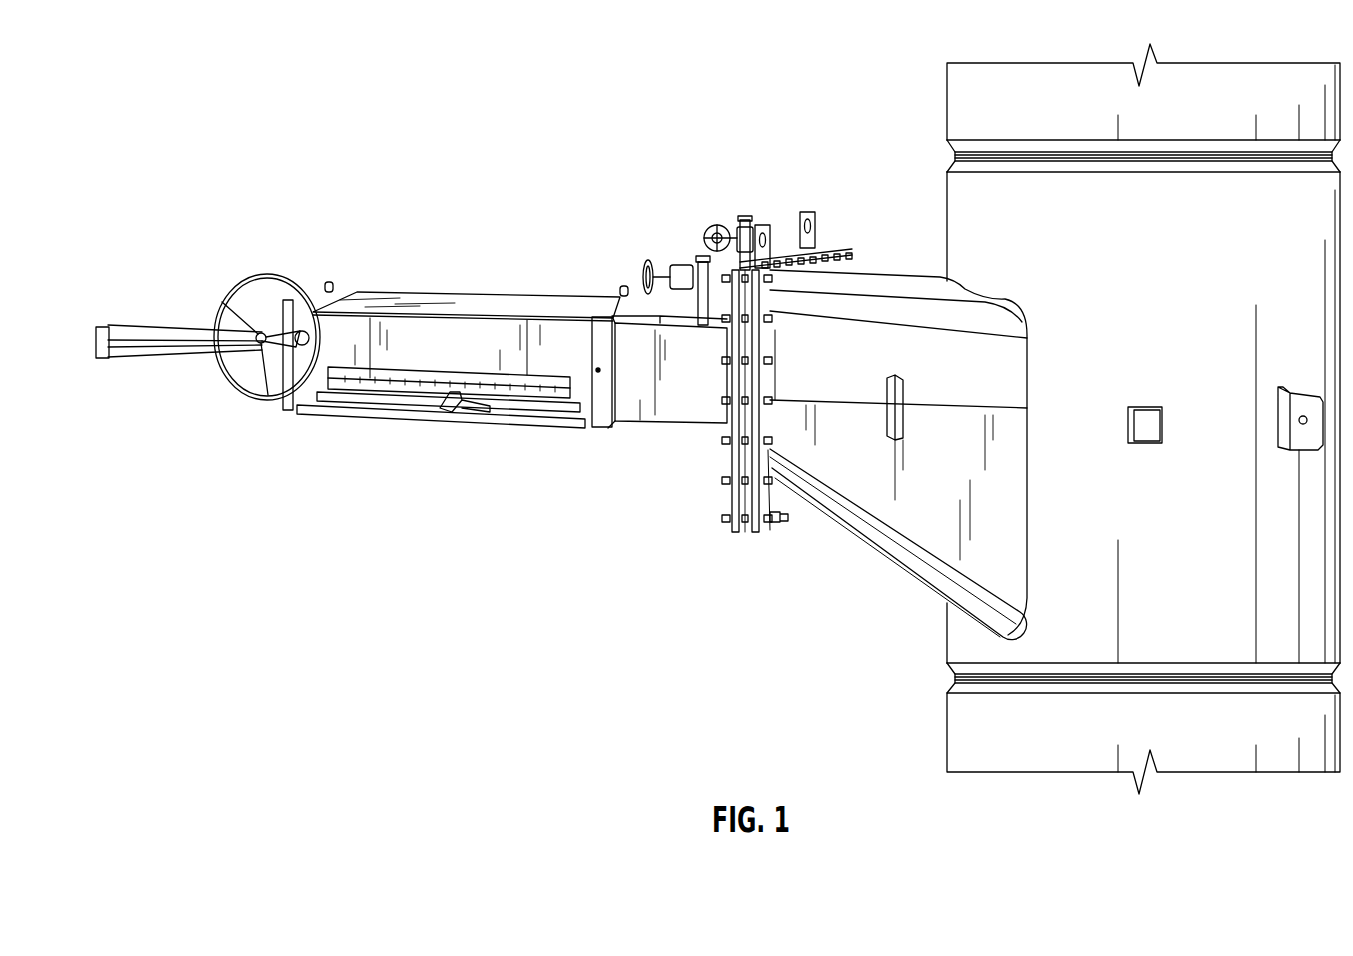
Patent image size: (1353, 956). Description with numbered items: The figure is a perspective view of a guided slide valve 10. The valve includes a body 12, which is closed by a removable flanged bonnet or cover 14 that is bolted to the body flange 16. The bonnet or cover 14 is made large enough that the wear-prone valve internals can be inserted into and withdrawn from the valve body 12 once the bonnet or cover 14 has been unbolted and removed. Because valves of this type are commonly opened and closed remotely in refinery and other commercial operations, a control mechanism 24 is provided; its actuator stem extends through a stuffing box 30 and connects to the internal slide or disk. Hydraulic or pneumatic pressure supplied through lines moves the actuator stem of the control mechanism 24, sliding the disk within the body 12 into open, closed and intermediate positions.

The guided slide valve 10 is at (896, 180).
The body 12 is at (955, 633).
The flanged bonnet or cover 14 is at (737, 493).
The body flange 16 is at (782, 518).
The control mechanism 24 is at (482, 300).
The stuffing box 30 is at (697, 407).